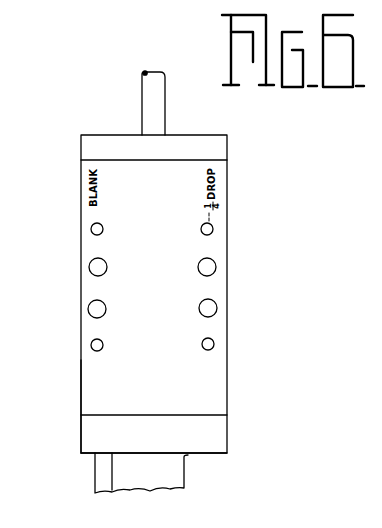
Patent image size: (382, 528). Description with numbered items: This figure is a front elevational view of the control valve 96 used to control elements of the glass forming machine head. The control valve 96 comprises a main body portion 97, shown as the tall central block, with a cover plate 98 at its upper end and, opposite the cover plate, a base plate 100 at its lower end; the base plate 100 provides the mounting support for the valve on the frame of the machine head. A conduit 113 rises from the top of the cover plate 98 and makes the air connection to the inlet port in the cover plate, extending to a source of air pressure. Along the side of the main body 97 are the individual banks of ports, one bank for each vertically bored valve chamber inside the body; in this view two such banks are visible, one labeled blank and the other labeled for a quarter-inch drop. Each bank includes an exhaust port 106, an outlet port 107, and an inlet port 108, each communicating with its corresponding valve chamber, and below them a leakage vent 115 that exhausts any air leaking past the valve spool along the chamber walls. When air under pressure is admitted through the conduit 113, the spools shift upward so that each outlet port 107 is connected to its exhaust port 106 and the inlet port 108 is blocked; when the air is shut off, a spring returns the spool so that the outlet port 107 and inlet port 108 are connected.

The control valve 96 is at (73, 181).
The main body portion 97 is at (80, 387).
The cover plate 98 is at (213, 149).
The base plate 100 is at (103, 434).
The exhaust port 106 is at (91, 229).
The outlet port 107 is at (90, 270).
The inlet port 108 is at (89, 311).
The conduit 113 is at (158, 112).
The leakage vent 115 is at (92, 346).